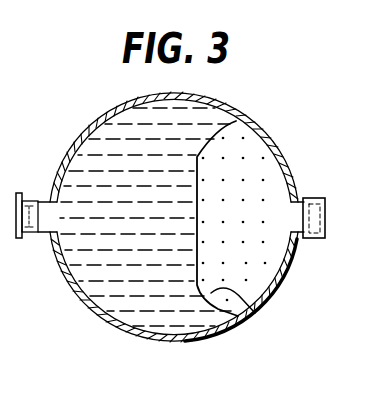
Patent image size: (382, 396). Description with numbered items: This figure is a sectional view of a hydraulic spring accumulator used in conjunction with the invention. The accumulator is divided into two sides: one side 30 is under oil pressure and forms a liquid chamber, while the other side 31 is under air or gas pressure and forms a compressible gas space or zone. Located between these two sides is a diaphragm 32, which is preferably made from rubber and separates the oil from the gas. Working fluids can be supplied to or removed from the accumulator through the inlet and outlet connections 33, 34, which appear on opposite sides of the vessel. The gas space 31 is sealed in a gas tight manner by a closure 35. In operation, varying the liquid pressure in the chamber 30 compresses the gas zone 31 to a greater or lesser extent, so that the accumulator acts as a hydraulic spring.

The oil pressure side 30 is at (113, 288).
The gas pressure side 31 is at (257, 263).
The diaphragm 32 is at (234, 299).
The inlet and outlet connection 33 is at (28, 197).
The inlet and outlet connection 34 is at (294, 198).
The closure 35 is at (326, 199).